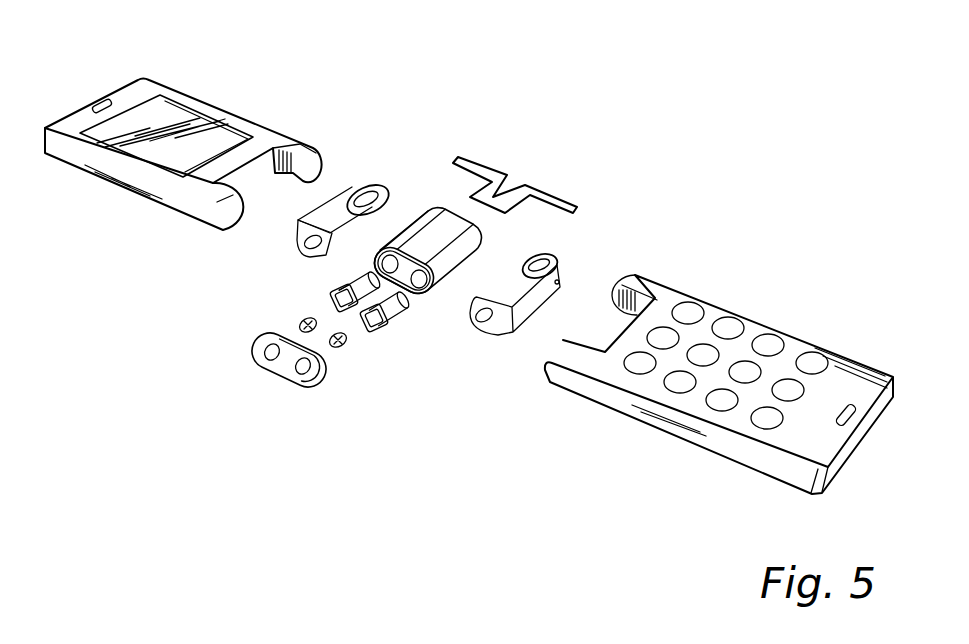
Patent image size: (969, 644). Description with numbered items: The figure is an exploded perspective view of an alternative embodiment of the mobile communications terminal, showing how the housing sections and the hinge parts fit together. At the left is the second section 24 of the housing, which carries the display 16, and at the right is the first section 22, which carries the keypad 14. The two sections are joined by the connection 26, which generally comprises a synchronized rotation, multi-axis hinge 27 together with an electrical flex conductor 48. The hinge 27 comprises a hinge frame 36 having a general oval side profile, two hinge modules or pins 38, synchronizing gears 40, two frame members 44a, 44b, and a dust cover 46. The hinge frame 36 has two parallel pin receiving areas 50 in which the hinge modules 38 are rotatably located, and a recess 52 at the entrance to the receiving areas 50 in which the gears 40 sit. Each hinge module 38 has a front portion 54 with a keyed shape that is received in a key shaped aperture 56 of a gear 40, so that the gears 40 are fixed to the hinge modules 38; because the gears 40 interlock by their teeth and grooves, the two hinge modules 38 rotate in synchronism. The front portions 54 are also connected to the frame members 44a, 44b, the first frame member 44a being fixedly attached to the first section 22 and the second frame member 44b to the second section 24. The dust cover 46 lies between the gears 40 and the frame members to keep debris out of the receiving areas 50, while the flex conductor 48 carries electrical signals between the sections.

The keypad 14 is at (728, 328).
The display 16 is at (167, 115).
The first section 22 is at (755, 322).
The second section 24 is at (235, 118).
The connection 26 is at (263, 412).
The synchronized rotation, multi-axis hinge 27 is at (239, 403).
The hinge frame 36 is at (392, 256).
The hinge modules 38 is at (335, 291).
The synchronizing gears 40 is at (300, 325).
The first frame member 44a is at (325, 195).
The second frame member 44b is at (543, 296).
The dust cover 46 is at (262, 356).
The electrical flex conductor 48 is at (538, 193).
The pin receiving areas 50 is at (385, 262).
The recess 52 is at (387, 248).
The front portions 54 is at (353, 308).
The key shaped apertures 56 is at (290, 324).